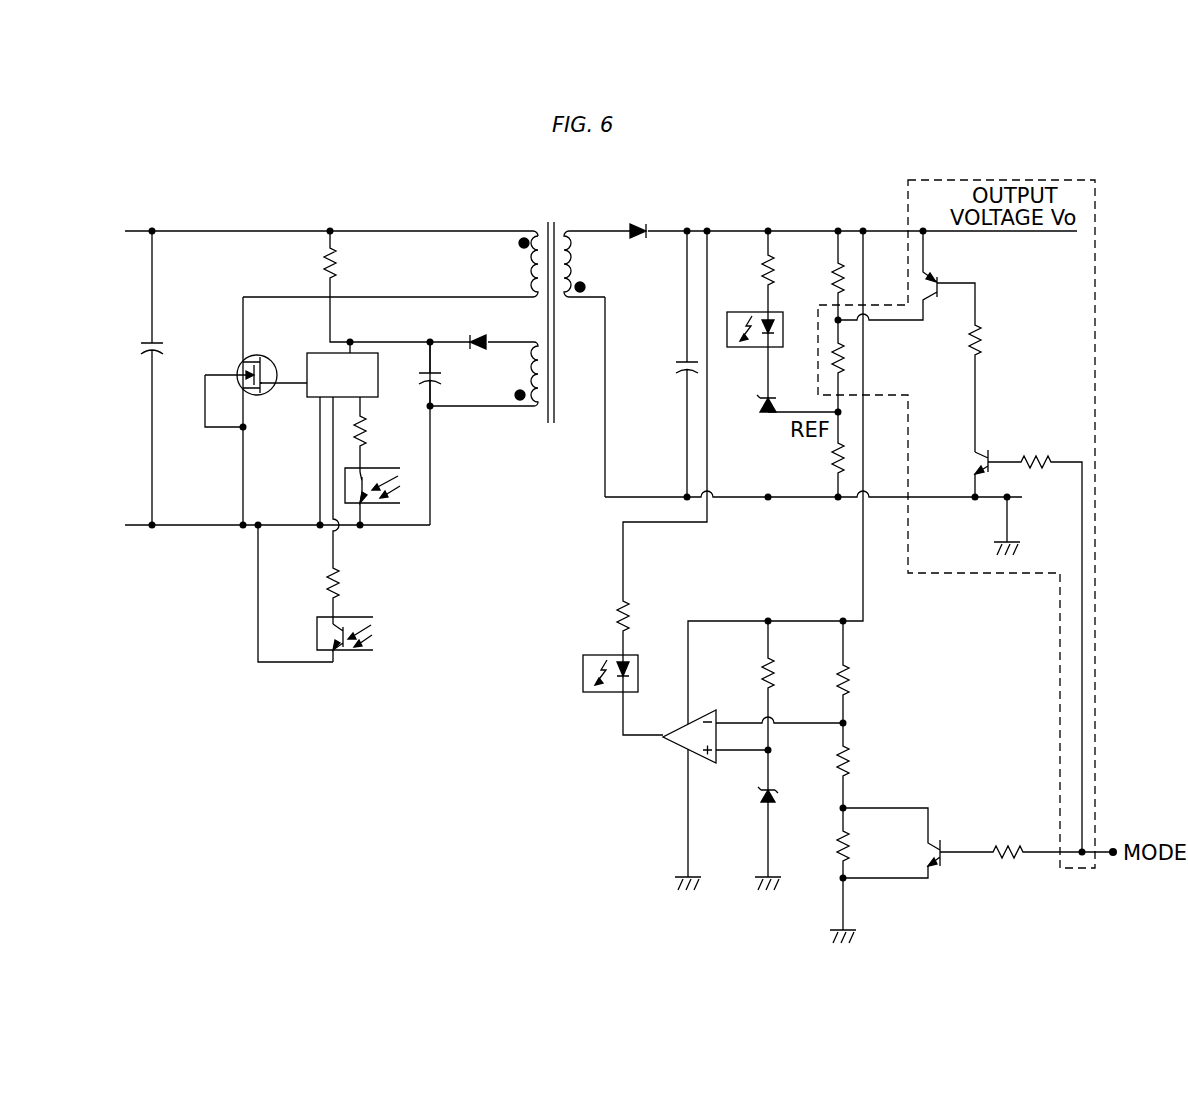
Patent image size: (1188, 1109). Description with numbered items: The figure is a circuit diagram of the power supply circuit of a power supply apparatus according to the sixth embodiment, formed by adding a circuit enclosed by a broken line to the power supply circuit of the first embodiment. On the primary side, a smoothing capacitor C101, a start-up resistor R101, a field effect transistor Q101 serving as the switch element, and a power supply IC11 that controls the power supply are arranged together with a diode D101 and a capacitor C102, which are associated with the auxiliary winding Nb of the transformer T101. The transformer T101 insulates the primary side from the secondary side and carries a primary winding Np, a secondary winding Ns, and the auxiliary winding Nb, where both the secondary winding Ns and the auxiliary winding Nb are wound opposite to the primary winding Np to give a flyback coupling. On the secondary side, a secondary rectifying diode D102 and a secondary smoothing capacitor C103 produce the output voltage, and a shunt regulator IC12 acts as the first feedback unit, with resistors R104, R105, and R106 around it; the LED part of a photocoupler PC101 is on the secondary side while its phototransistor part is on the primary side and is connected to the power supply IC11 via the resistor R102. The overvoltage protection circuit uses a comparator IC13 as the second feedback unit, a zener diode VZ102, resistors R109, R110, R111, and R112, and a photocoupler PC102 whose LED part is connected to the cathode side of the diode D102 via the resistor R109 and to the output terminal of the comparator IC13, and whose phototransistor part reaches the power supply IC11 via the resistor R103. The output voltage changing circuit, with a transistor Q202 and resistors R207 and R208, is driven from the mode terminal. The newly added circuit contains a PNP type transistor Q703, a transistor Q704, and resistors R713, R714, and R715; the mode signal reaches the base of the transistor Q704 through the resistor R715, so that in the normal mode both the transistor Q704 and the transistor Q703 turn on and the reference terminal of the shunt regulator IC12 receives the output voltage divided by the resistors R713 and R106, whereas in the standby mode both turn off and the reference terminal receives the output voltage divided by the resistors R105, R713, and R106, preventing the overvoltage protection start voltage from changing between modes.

The smoothing capacitor C101 is at (178, 378).
The start-up resistor R101 is at (304, 264).
The field effect transistor Q101 is at (257, 361).
The power supply IC IC11 is at (342, 369).
The resistor R102 is at (393, 434).
The photocoupler PC101 is at (385, 503).
The resistor R103 is at (364, 594).
The photocoupler PC102 is at (490, 676).
The transformer T101 is at (556, 309).
The primary winding Np is at (390, 266).
The secondary winding Ns is at (597, 264).
The auxiliary winding Nb is at (484, 374).
The diode D101 is at (485, 330).
The capacitor C102 is at (459, 374).
The secondary rectifying diode D102 is at (645, 248).
The secondary smoothing capacitor C103 is at (665, 364).
The resistor R104 is at (775, 268).
The resistor R105 is at (828, 278).
The shunt regulator IC12 is at (747, 420).
The resistor R106 is at (811, 454).
The resistor R713 is at (845, 360).
The PNP type transistor Q703 is at (912, 276).
The resistor R714 is at (1006, 387).
The transistor Q704 is at (970, 473).
The resistor R715 is at (1045, 640).
The resistor R109 is at (596, 616).
The resistor R110 is at (741, 673).
The resistor R111 is at (872, 681).
The resistor R112 is at (873, 761).
The comparator IC13 is at (738, 741).
The zener diode VZ102 is at (737, 798).
The resistor R208 is at (815, 846).
The transistor Q202 is at (916, 843).
The resistor R207 is at (1048, 867).